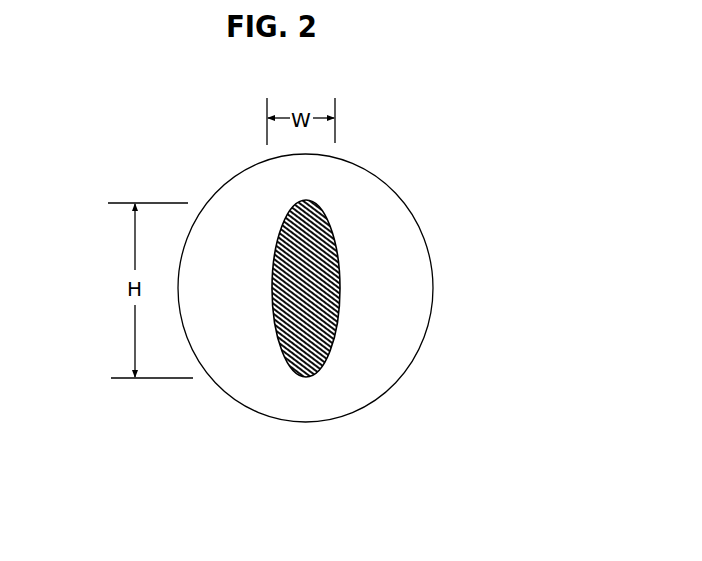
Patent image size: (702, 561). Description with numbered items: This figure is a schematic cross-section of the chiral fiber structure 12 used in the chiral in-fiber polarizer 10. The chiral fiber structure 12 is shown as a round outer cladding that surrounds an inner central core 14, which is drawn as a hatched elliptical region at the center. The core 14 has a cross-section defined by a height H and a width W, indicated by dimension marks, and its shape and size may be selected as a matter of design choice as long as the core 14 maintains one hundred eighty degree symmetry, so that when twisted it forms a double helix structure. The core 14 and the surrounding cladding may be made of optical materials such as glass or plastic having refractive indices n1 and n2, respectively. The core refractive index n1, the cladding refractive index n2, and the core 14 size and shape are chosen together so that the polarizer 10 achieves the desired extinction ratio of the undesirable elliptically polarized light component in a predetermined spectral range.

The chiral in-fiber polarizer 10 is at (362, 167).
The chiral fiber structure 12 is at (275, 252).
The inner central core 14 is at (252, 192).
The core refractive index n1 is at (295, 328).
The cladding refractive index n2 is at (383, 352).